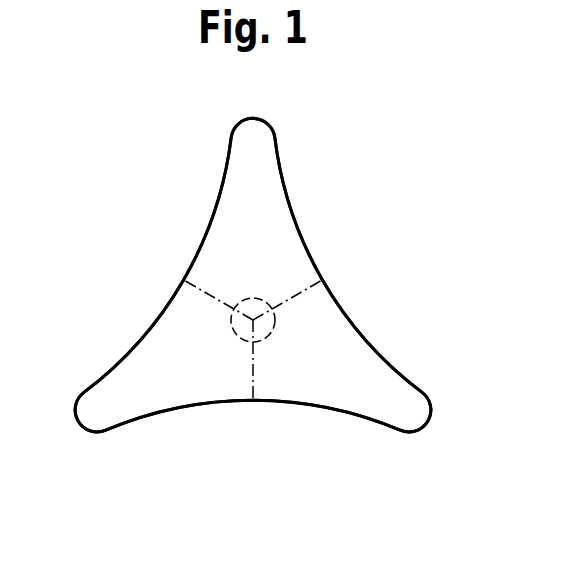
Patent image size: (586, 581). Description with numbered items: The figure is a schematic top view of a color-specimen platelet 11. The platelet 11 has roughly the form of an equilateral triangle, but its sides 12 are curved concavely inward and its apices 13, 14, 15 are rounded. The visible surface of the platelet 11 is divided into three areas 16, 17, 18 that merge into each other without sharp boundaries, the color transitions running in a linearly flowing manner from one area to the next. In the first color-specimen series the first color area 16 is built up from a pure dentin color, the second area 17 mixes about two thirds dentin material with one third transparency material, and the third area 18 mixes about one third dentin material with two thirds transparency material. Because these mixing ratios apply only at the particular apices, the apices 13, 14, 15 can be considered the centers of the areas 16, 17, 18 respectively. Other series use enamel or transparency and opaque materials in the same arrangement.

The color-specimen platelet 11 is at (213, 147).
The sides 12 is at (210, 226).
The apex 13 is at (254, 118).
The apex 14 is at (81, 419).
The apex 15 is at (430, 420).
The first color area 16 is at (275, 188).
The second area 17 is at (147, 360).
The third area 18 is at (365, 390).